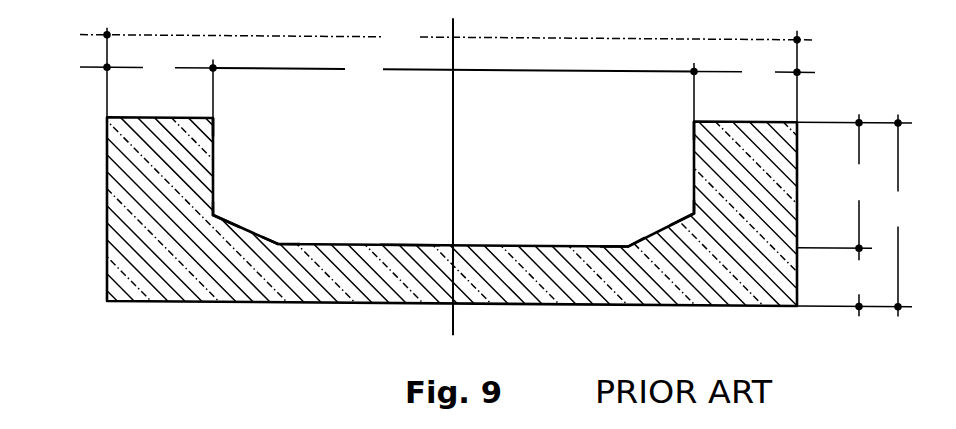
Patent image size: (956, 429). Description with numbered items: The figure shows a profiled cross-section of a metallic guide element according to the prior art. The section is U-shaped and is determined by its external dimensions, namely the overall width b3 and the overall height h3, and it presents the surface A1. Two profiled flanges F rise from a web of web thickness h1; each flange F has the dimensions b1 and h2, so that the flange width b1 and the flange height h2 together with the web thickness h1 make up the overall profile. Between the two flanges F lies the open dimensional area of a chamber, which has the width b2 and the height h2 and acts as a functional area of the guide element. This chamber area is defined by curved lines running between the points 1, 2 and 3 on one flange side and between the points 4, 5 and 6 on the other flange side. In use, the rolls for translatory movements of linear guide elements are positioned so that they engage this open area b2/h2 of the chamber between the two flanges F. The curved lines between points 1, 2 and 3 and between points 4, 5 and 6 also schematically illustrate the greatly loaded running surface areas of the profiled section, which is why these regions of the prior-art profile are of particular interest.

The point 1 is at (213, 116).
The point 2 is at (213, 214).
The point 3 is at (280, 241).
The point 4 is at (694, 118).
The point 5 is at (694, 208).
The point 6 is at (628, 240).
The surface A1 is at (406, 259).
The flange F is at (150, 156).
The flange width dimension b1 is at (447, 87).
The chamber width dimension b2 is at (453, 69).
The external width dimension b3 is at (447, 71).
The web thickness h1 is at (834, 281).
The chamber height dimension h2 is at (857, 181).
The external height dimension h3 is at (854, 215).